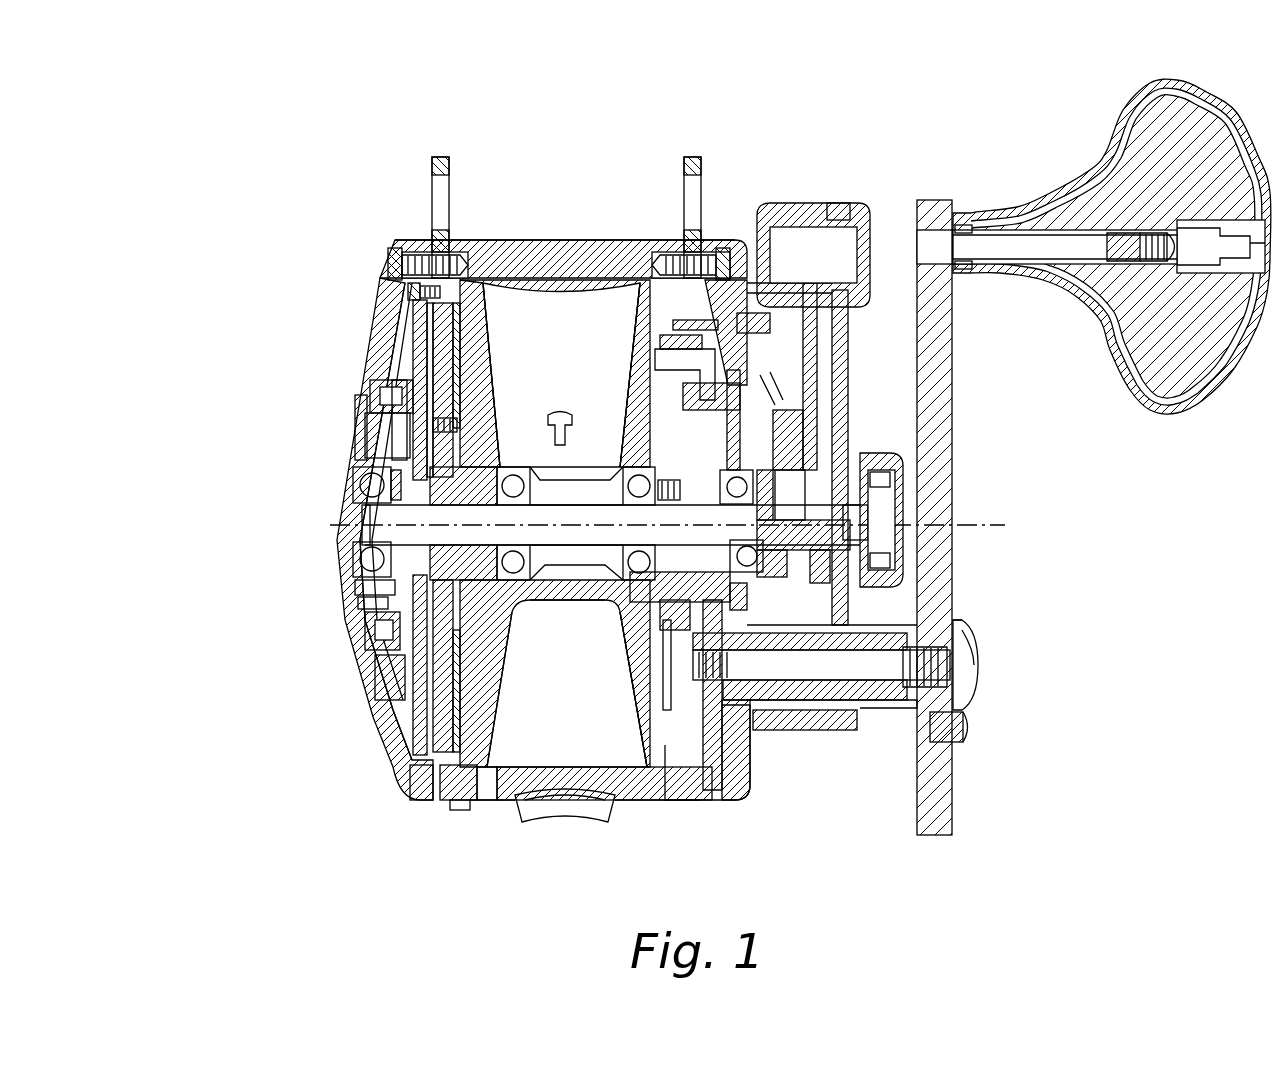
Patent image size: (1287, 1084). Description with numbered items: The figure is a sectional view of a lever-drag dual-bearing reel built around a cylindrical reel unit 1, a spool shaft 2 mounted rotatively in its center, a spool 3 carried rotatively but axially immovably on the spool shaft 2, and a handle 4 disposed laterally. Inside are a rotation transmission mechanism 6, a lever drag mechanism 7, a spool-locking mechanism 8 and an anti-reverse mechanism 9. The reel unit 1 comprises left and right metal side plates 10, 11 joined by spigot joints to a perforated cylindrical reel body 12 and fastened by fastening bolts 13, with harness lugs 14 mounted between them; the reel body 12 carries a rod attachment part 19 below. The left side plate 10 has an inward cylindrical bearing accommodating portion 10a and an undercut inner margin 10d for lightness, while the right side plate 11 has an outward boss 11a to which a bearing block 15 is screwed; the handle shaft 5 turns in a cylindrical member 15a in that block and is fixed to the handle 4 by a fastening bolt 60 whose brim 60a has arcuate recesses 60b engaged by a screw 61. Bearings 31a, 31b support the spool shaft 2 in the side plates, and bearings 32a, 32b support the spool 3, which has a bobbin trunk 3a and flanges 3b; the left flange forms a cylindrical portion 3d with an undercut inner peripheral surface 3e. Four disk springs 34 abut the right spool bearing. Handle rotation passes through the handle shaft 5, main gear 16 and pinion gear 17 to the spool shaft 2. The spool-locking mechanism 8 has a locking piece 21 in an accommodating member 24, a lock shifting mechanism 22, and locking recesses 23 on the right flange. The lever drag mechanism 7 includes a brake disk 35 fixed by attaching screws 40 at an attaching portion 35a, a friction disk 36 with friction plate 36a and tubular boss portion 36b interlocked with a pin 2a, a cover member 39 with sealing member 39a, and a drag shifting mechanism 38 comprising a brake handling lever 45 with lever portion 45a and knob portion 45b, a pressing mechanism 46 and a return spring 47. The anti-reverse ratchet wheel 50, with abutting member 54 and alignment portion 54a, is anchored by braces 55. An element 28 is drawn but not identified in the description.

The reel unit 1 is at (598, 215).
The spool shaft 2 is at (592, 528).
The pin 2a is at (475, 492).
The spool 3 is at (555, 600).
The bobbin trunk 3a is at (568, 600).
The flanges 3b is at (625, 715).
The cylindrical portion 3d is at (470, 285).
The inner peripheral surface 3e is at (464, 802).
The handle 4 is at (950, 395).
The handle shaft 5 is at (878, 690).
The rotation transmission mechanism 6 is at (668, 792).
The lever drag mechanism 7 is at (410, 680).
The spool-locking mechanism 8 is at (690, 320).
The anti-reverse mechanism 9 is at (375, 612).
The left side plate 10 is at (380, 770).
The bearing accommodating portion 10a is at (368, 582).
The inner margin 10d is at (415, 780).
The right side plate 11 is at (740, 738).
The boss 11a is at (851, 577).
The reel body 12 is at (522, 240).
The fastening bolts 13 is at (420, 256).
The harness lugs 14 is at (442, 156).
The bearing block 15 is at (820, 665).
The cylindrical member 15a is at (848, 712).
The main gear 16 is at (728, 780).
The pinion gear 17 is at (690, 490).
The rod attachment part 19 is at (573, 822).
The locking piece 21 is at (705, 345).
The lock shifting mechanism 22 is at (778, 340).
The locking recesses 23 is at (700, 715).
The accommodating member 24 is at (668, 395).
The spool lower wall 28 is at (650, 740).
The left bearing 31a is at (365, 560).
The right bearing 31b is at (685, 578).
The left spool bearing 32a is at (505, 395).
The right spool bearing 32b is at (597, 415).
The disk springs 34 is at (612, 482).
The brake disk 35 is at (452, 325).
The attaching portion 35a is at (455, 380).
The friction disk 36 is at (408, 318).
The friction plate 36a is at (420, 355).
The boss portion 36b is at (347, 523).
The drag shifting mechanism 38 is at (843, 470).
The cover member 39 is at (372, 398).
The sealing member 39a is at (366, 460).
The attaching screws 40 is at (500, 640).
The brake handling lever 45 is at (838, 320).
The lever portion 45a is at (952, 355).
The knob portion 45b is at (835, 215).
The pressing mechanism 46 is at (850, 517).
The return spring 47 is at (480, 546).
The ratchet wheel 50 is at (360, 430).
The abutting member 54 is at (370, 512).
The alignment portion 54a is at (370, 600).
The braces 55 is at (380, 650).
The fastening bolt 60 is at (965, 662).
The brim 60a is at (968, 640).
The arcuate recesses 60b is at (962, 625).
The screw 61 is at (968, 730).